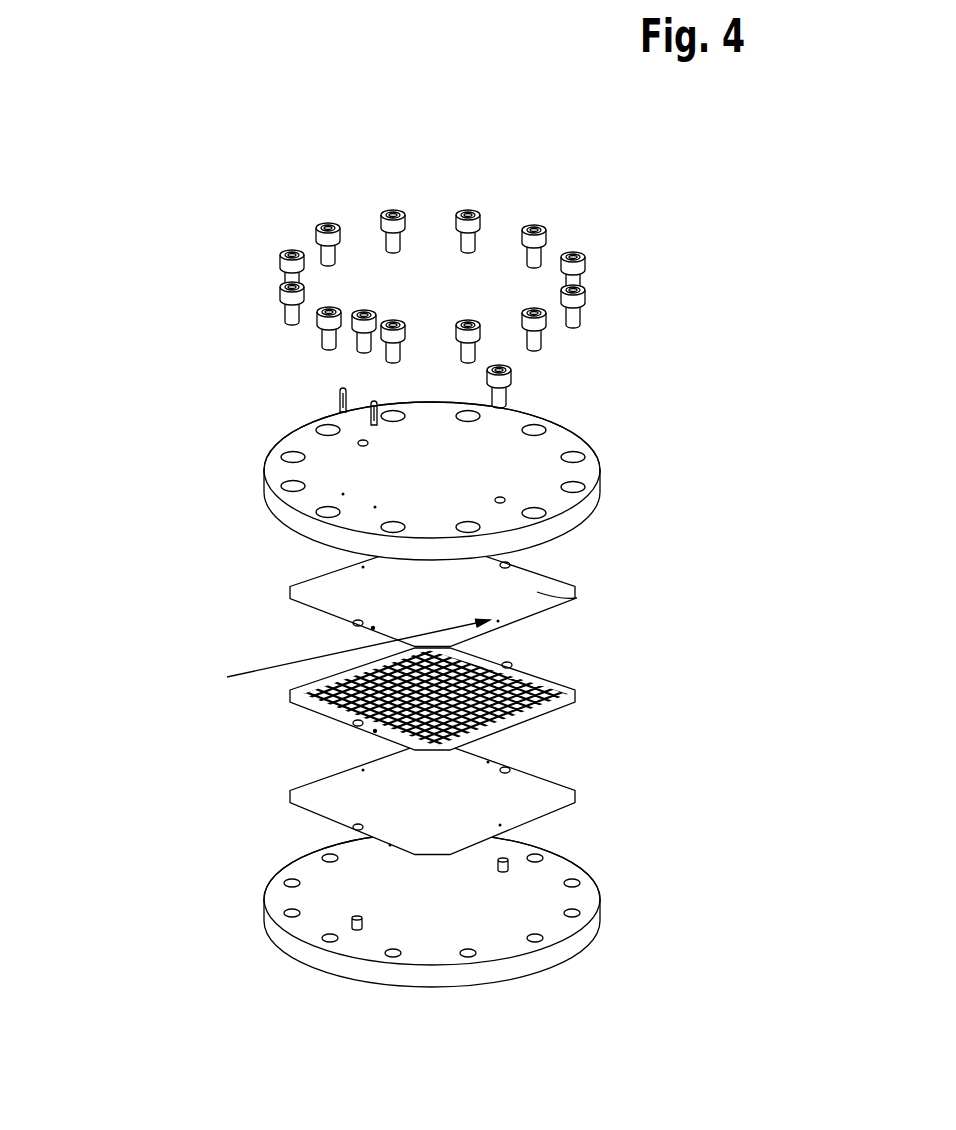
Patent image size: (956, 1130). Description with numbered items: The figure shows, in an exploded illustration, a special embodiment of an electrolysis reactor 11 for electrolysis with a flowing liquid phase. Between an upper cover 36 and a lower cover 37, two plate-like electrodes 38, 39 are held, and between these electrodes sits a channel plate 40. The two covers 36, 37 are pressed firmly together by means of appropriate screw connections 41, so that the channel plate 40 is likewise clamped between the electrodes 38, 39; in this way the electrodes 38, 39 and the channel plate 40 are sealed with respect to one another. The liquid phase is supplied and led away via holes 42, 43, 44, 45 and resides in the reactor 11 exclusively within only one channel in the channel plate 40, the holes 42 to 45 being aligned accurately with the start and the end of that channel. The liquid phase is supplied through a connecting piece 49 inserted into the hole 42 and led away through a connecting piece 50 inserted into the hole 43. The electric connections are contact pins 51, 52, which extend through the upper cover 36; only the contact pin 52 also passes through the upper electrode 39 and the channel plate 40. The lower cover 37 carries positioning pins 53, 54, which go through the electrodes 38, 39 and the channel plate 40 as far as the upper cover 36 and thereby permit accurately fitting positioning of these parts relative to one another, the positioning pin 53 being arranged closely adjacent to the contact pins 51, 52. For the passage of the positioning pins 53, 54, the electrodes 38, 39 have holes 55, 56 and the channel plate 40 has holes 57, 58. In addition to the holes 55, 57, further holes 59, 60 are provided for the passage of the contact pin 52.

The electrolysis reactor 11 is at (235, 105).
The upper cover 36 is at (535, 467).
The lower cover 37 is at (540, 907).
The plate-like electrode 38 is at (537, 802).
The upper electrode 39 is at (452, 649).
The channel plate 40 is at (547, 685).
The screw connections 41 is at (612, 258).
The hole 42 is at (357, 443).
The hole 43 is at (500, 503).
The hole 44 is at (347, 572).
The hole 45 is at (339, 654).
The connecting piece 49 is at (370, 306).
The connecting piece 50 is at (507, 365).
The contact pin 51 is at (338, 398).
The contact pin 52 is at (376, 402).
The positioning pin 53 is at (363, 930).
The positioning pin 54 is at (508, 868).
The hole 55 is at (352, 623).
The hole 56 is at (505, 565).
The hole 57 is at (356, 725).
The hole 58 is at (507, 664).
The hole 59 is at (371, 629).
The hole 60 is at (373, 733).